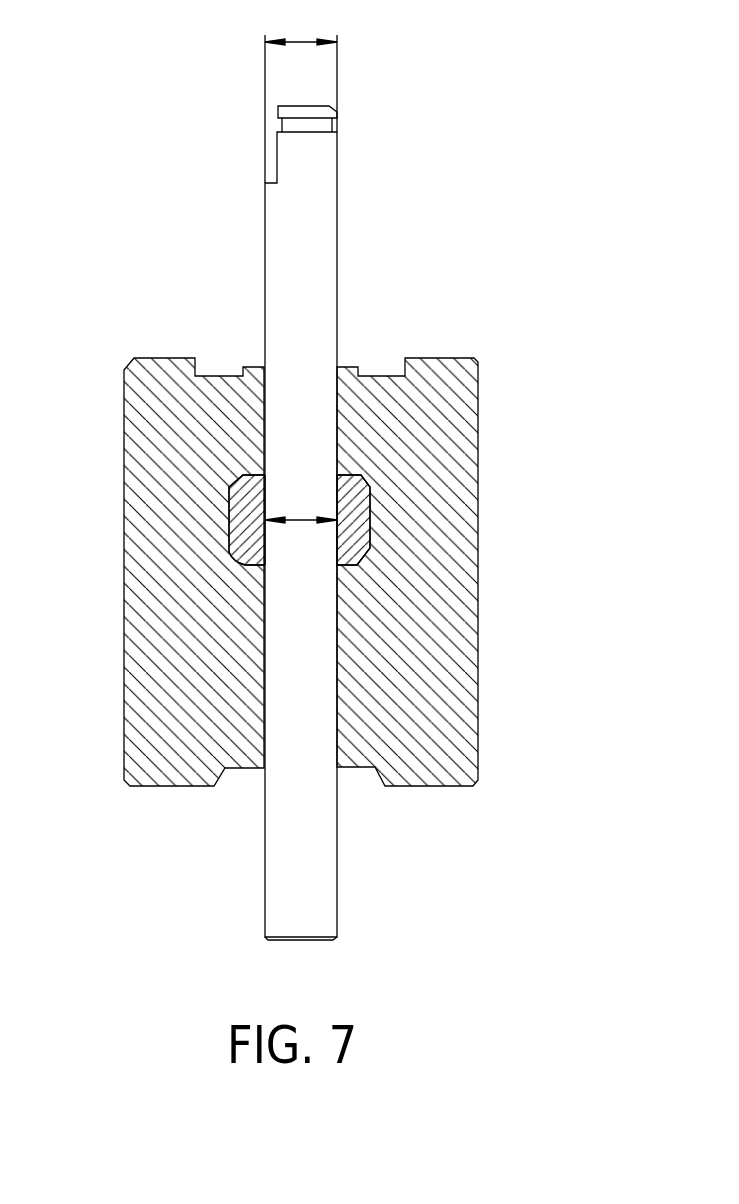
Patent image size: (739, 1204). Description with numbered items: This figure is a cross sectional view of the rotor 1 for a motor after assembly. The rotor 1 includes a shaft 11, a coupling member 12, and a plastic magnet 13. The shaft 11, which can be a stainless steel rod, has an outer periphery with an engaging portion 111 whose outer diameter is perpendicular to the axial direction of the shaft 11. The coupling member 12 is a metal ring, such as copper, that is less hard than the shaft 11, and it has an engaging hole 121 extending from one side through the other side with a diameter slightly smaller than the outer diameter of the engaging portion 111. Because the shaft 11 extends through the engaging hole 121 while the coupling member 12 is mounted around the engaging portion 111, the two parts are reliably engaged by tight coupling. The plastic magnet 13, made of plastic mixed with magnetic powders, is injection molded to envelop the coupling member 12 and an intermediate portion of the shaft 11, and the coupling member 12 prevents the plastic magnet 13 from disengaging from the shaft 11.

The rotor 1 is at (423, 168).
The shaft 11 is at (260, 263).
The engaging portion 111 is at (337, 538).
The coupling member 12 is at (232, 470).
The engaging hole 121 is at (337, 488).
The plastic magnet 13 is at (142, 382).